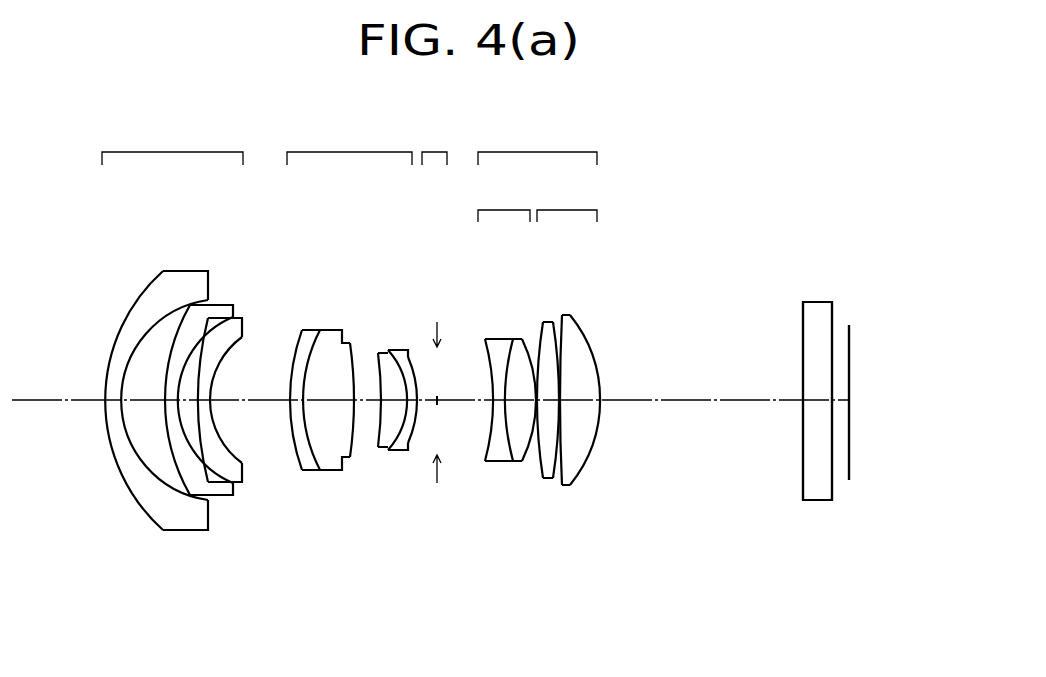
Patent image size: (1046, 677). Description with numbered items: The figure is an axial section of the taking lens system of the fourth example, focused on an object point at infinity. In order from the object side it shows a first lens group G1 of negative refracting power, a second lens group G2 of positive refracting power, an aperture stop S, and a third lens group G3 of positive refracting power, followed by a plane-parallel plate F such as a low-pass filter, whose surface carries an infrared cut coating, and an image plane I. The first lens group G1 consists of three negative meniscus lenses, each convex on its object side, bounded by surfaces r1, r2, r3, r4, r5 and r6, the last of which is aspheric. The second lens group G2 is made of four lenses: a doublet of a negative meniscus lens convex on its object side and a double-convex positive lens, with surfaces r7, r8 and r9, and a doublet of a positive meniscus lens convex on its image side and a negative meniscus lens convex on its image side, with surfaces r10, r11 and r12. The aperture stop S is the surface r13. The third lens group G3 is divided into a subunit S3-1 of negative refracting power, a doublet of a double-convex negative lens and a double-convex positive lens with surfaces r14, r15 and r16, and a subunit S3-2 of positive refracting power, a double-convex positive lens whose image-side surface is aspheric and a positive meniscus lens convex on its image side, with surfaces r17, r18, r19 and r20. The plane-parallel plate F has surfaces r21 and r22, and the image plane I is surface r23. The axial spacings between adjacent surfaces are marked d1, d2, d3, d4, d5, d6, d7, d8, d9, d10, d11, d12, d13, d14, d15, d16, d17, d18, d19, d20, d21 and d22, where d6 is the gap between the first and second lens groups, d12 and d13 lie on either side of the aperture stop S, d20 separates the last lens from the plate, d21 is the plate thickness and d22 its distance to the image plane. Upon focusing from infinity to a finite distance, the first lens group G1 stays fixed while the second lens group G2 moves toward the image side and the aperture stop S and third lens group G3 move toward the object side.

The first lens group G1 is at (172, 142).
The second lens group G2 is at (349, 142).
The third lens group G3 is at (537, 142).
The aperture stop S is at (434, 301).
The subunit of negative refracting power S3-1 is at (501, 200).
The subunit of positive refracting power S3-2 is at (567, 200).
The plane-parallel plate F is at (817, 500).
The image plane I is at (850, 380).
The radius of curvature of lens surface r1 is at (132, 308).
The radius of curvature of lens surface r2 is at (170, 310).
The radius of curvature of lens surface r3 is at (187, 320).
The radius of curvature of lens surface r4 is at (217, 317).
The radius of curvature of lens surface r5 is at (227, 320).
The radius of curvature of lens surface r6 is at (247, 330).
The radius of curvature of lens surface r7 is at (298, 350).
The radius of curvature of lens surface r8 is at (322, 333).
The radius of curvature of lens surface r9 is at (352, 343).
The radius of curvature of lens surface r10 is at (378, 357).
The radius of curvature of lens surface r11 is at (388, 350).
The radius of curvature of lens surface r12 is at (408, 350).
The radius of curvature of lens surface r13 is at (443, 363).
The radius of curvature of lens surface r14 is at (487, 345).
The radius of curvature of lens surface r15 is at (507, 340).
The radius of curvature of lens surface r16 is at (532, 340).
The radius of curvature of lens surface r17 is at (538, 340).
The radius of curvature of lens surface r18 is at (557, 340).
The radius of curvature of lens surface r19 is at (572, 313).
The radius of curvature of lens surface r20 is at (588, 330).
The radius of curvature of lens surface r21 is at (803, 328).
The radius of curvature of lens surface r22 is at (830, 328).
The radius of curvature of lens surface r23 is at (850, 340).
The spacing between adjacent lens surfaces d1 is at (115, 407).
The spacing between adjacent lens surfaces d2 is at (147, 426).
The spacing between adjacent lens surfaces d3 is at (167, 407).
The spacing between adjacent lens surfaces d4 is at (178, 407).
The spacing between adjacent lens surfaces d5 is at (210, 493).
The spacing between adjacent lens surfaces d6 is at (257, 426).
The spacing between adjacent lens surfaces d7 is at (303, 472).
The spacing between adjacent lens surfaces d8 is at (328, 423).
The spacing between adjacent lens surfaces d9 is at (360, 405).
The spacing between adjacent lens surfaces d10 is at (382, 410).
The spacing between adjacent lens surfaces d11 is at (402, 407).
The spacing between adjacent lens surfaces d12 is at (425, 407).
The spacing between adjacent lens surfaces d13 is at (473, 425).
The spacing between adjacent lens surfaces d14 is at (495, 403).
The spacing between adjacent lens surfaces d15 is at (513, 405).
The spacing between adjacent lens surfaces d16 is at (528, 405).
The spacing between adjacent lens surfaces d17 is at (550, 405).
The spacing between adjacent lens surfaces d18 is at (562, 483).
The spacing between adjacent lens surfaces d19 is at (582, 420).
The spacing between adjacent lens surfaces d20 is at (689, 425).
The spacing between adjacent lens surfaces d21 is at (820, 403).
The spacing between adjacent lens surfaces d22 is at (843, 407).